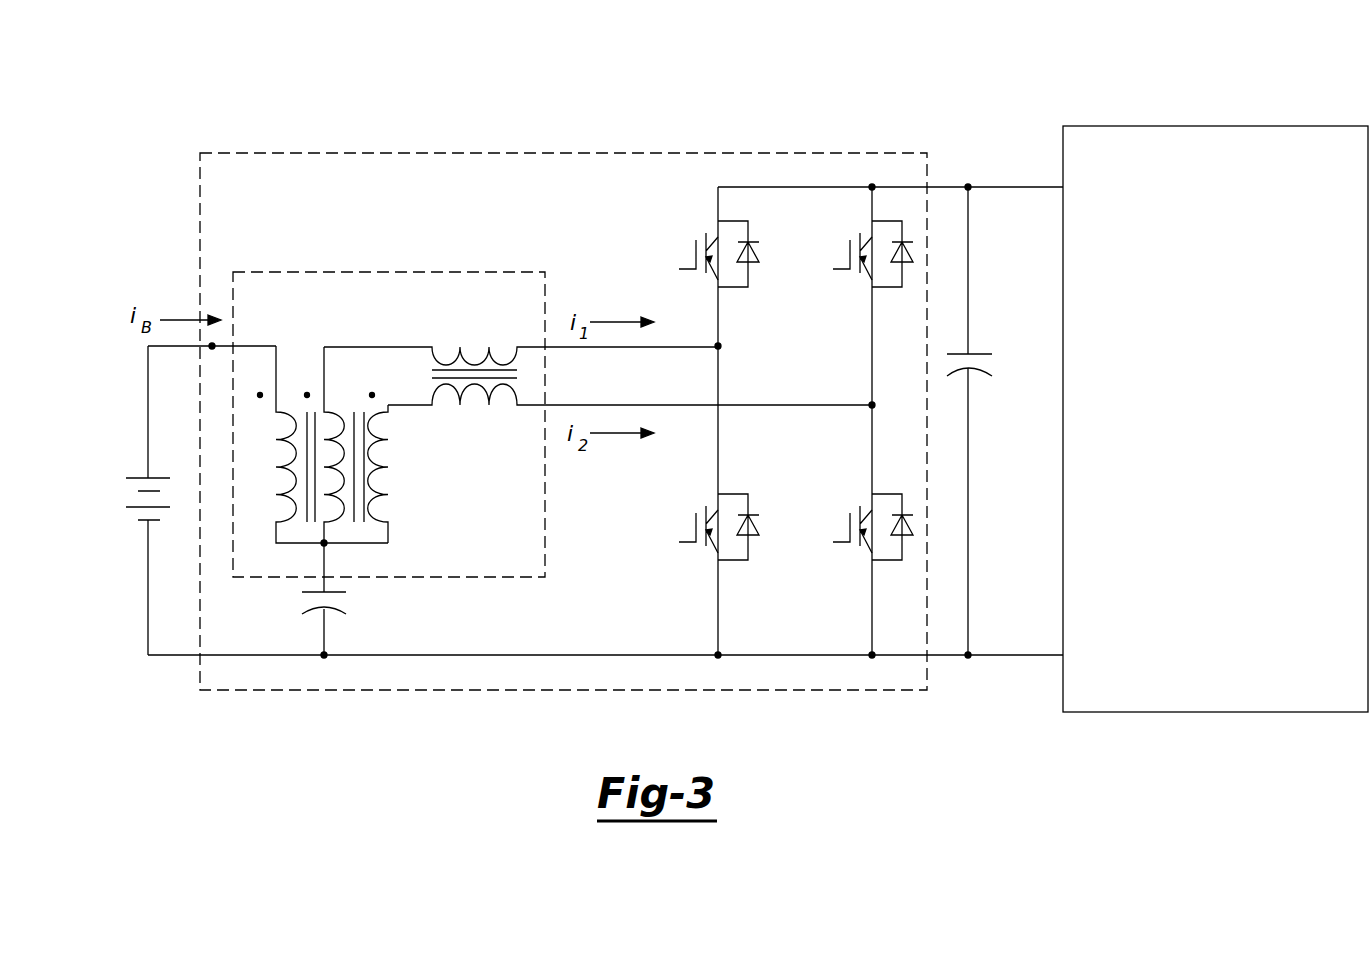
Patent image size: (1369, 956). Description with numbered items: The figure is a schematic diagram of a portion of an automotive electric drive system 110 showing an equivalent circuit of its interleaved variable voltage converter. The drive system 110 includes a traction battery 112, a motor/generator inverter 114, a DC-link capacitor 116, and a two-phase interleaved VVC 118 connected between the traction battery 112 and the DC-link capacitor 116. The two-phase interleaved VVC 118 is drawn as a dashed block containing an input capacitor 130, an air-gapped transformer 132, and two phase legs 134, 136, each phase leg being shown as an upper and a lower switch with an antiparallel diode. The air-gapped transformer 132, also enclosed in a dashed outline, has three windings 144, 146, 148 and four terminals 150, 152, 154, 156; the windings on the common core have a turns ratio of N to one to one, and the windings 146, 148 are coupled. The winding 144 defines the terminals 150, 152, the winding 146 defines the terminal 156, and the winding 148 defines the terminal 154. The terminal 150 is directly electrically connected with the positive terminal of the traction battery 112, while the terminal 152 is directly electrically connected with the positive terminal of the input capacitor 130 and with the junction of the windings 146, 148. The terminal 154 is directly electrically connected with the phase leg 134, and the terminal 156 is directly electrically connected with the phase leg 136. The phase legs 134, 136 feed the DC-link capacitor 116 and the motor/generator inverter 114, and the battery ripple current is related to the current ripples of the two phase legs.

The automotive electric drive system 110 is at (130, 203).
The traction battery 112 is at (140, 478).
The motor/generator inverter 114 is at (1215, 126).
The DC-link capacitor 116 is at (958, 354).
The two-phase interleaved VVC 118 is at (792, 153).
The input capacitor 130 is at (345, 590).
The air-gapped transformer 132 is at (495, 272).
The phase leg 134 is at (718, 470).
The phase leg 136 is at (872, 305).
The winding 144 is at (258, 346).
The winding 146 is at (410, 405).
The winding 148 is at (383, 347).
The terminal 150 is at (212, 346).
The terminal 152 is at (324, 543).
The terminal 154 is at (718, 346).
The terminal 156 is at (872, 405).